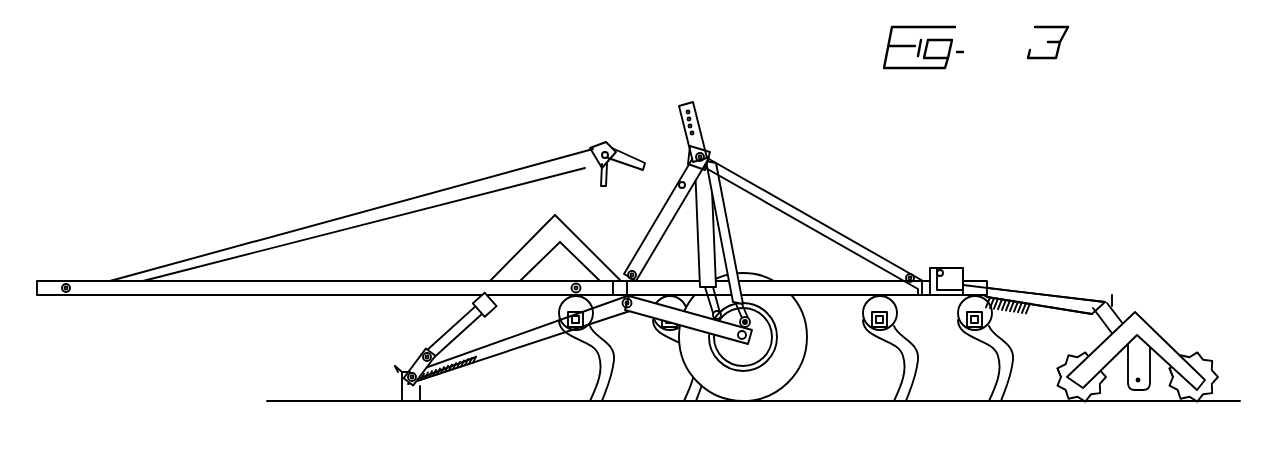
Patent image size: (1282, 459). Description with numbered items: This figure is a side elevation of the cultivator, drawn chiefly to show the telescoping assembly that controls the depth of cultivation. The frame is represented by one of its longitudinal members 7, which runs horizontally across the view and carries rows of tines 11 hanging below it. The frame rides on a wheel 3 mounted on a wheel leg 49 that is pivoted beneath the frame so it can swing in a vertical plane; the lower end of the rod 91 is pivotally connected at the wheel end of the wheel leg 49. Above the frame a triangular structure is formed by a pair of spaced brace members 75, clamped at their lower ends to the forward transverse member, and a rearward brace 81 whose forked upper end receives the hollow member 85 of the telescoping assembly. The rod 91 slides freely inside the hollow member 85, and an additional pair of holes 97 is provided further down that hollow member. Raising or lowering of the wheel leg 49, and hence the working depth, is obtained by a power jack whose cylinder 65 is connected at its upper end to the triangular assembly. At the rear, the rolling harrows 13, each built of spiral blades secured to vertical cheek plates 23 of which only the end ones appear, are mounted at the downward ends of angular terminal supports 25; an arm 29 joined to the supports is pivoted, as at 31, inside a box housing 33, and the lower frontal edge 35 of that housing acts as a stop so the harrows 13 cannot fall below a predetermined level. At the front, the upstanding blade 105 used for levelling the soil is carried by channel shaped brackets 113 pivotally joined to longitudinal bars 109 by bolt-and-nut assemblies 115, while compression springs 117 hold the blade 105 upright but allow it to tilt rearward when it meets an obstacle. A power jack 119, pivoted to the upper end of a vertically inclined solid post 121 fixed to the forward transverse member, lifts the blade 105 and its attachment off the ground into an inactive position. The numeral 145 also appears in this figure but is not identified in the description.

The wheel 3 is at (797, 372).
The longitudinal member 7 is at (857, 283).
The tine 11 is at (615, 366).
The harrow 13 is at (1216, 367).
The cheek plate 23 is at (1085, 401).
The angular terminal support 25 is at (1155, 322).
The arm 29 is at (1061, 289).
The pivot 31 is at (945, 272).
The box housing 33 is at (963, 268).
The lower frontal edge 35 is at (970, 287).
The wheel leg 49 is at (624, 326).
The cylinder 65 is at (697, 245).
The brace member 75 is at (662, 214).
The brace 81 is at (833, 230).
The hollow member 85 is at (725, 248).
The rod 91 is at (760, 290).
The holes 97 is at (712, 193).
The blade 105 is at (399, 384).
The longitudinal bar 109 is at (520, 348).
The channel shaped bracket 113 is at (413, 397).
The bolt-and-nut assembly 115 is at (411, 372).
The compression spring 117 is at (438, 384).
The power jack 119 is at (524, 249).
The post 121 is at (575, 242).
The pivot pin 145 is at (630, 315).